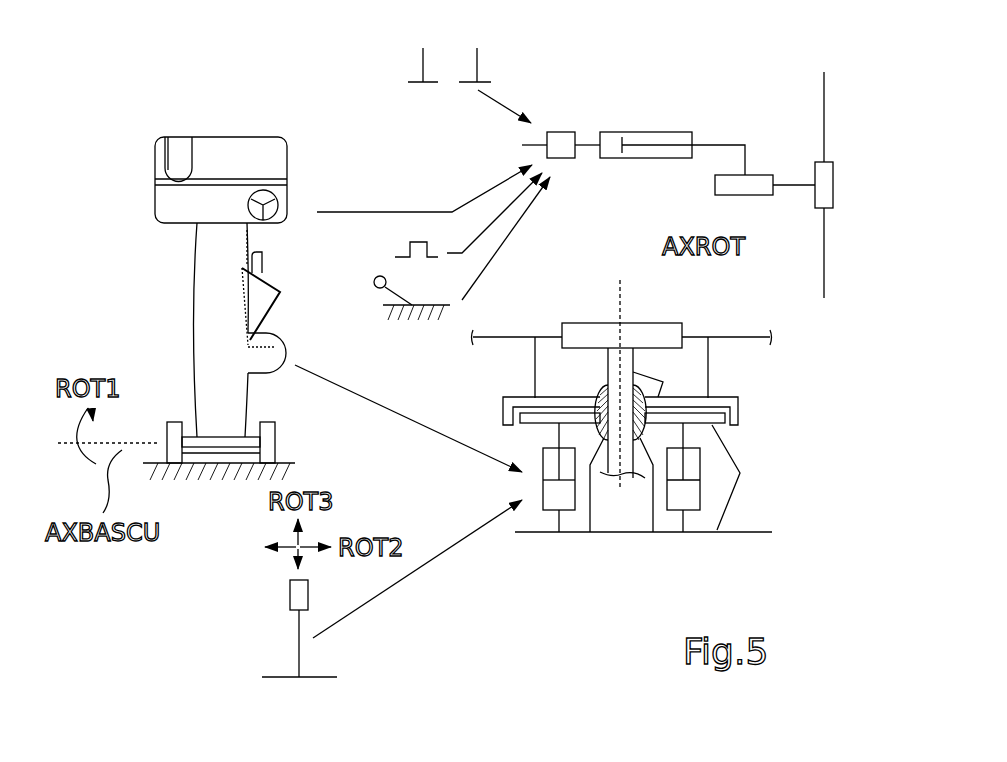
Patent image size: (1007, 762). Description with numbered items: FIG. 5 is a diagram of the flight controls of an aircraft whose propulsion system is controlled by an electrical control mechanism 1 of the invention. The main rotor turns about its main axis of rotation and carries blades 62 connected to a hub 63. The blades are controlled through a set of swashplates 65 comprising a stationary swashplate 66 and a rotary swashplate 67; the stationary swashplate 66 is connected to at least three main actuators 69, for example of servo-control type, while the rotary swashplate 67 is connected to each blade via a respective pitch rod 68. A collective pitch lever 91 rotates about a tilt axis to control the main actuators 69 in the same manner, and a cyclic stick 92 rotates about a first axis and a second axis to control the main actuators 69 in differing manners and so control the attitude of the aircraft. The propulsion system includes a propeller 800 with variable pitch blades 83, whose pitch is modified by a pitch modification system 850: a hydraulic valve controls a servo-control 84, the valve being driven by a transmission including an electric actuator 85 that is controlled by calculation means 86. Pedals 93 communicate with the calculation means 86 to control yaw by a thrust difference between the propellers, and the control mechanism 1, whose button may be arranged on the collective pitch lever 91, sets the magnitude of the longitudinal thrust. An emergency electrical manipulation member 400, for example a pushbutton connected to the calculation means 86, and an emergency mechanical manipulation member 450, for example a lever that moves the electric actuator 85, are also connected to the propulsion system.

The control mechanism 1 is at (287, 203).
The collective pitch lever 91 is at (190, 312).
The cyclic stick 92 is at (268, 638).
The pedals 93 is at (500, 62).
The emergency electrical manipulation member 400 is at (382, 248).
The emergency mechanical manipulation member 450 is at (418, 349).
The calculation means 86 is at (560, 132).
The electric actuator 85 is at (645, 132).
The servo-control 84 is at (760, 175).
The variable pitch blades 83 is at (826, 85).
The pitch modification system 850 is at (730, 98).
The propeller 800 is at (795, 243).
The hub 63 is at (578, 323).
The blades 62 is at (725, 337).
The pitch rod 68 is at (712, 370).
The rotary swashplate 67 is at (740, 398).
The set of swashplates 65 is at (762, 418).
The stationary swashplate 66 is at (690, 478).
The main actuators 69 is at (575, 495).